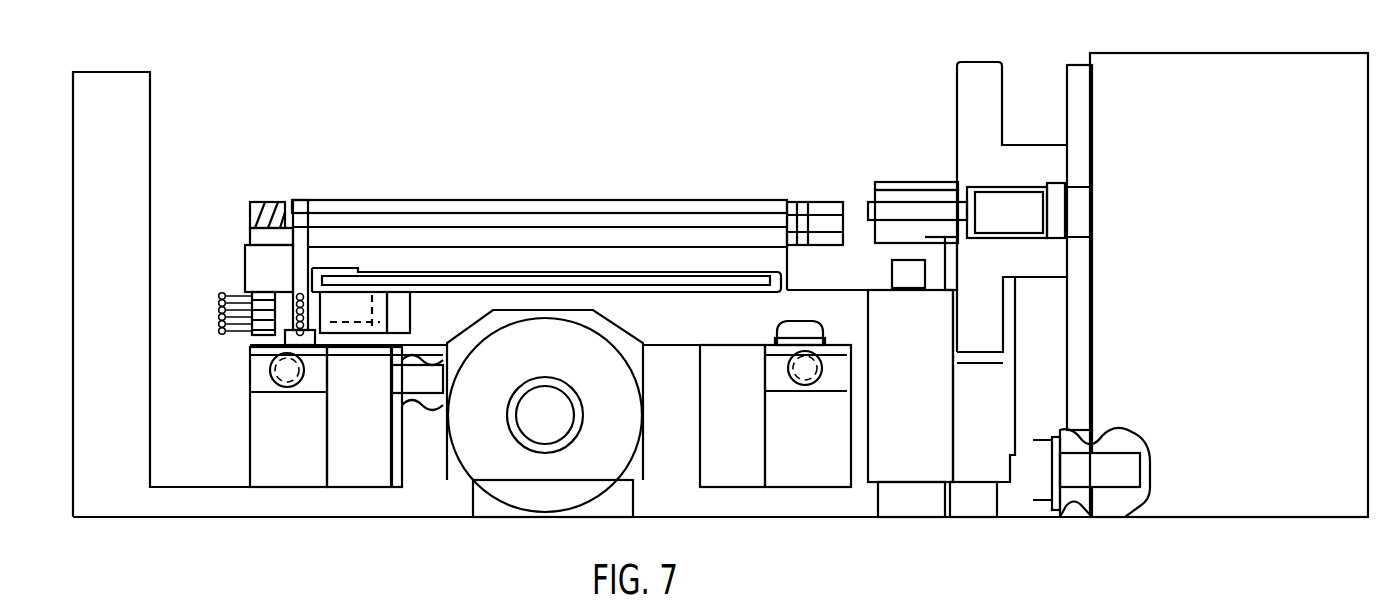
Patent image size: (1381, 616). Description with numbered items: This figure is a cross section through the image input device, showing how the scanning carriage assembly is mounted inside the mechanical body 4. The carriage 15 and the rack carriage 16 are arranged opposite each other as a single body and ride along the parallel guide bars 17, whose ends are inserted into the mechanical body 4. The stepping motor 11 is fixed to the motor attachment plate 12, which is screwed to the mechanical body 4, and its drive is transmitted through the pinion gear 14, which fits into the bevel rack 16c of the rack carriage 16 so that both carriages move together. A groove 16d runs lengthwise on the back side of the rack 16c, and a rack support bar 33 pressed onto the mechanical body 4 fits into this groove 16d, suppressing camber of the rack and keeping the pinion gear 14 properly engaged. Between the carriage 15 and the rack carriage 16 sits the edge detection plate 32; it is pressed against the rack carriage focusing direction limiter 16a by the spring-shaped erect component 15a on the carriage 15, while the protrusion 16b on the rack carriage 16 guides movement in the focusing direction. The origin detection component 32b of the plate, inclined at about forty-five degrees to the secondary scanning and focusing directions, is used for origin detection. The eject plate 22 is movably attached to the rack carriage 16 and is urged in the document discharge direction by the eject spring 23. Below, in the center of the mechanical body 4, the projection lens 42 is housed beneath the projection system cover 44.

The mechanical body 4 is at (115, 480).
The stepping motor 11 is at (1228, 82).
The motor attachment plate 12 is at (1078, 80).
The pinion gear 14 is at (983, 110).
The carriage 15 is at (660, 208).
The erect component 15a is at (262, 225).
The rack carriage 16 is at (713, 275).
The rack carriage focusing direction limiter 16a is at (250, 245).
The protrusion 16b is at (303, 237).
The bevel rack 16c is at (912, 240).
The groove 16d is at (892, 272).
The guide bars 17 is at (287, 372).
The eject plate 22 is at (337, 265).
The eject spring 23 is at (223, 285).
The edge detection plate 32 is at (487, 240).
The origin detection component 32b is at (543, 243).
The rack support bar 33 is at (908, 443).
The projection lens 42 is at (510, 463).
The projection system cover 44 is at (628, 340).